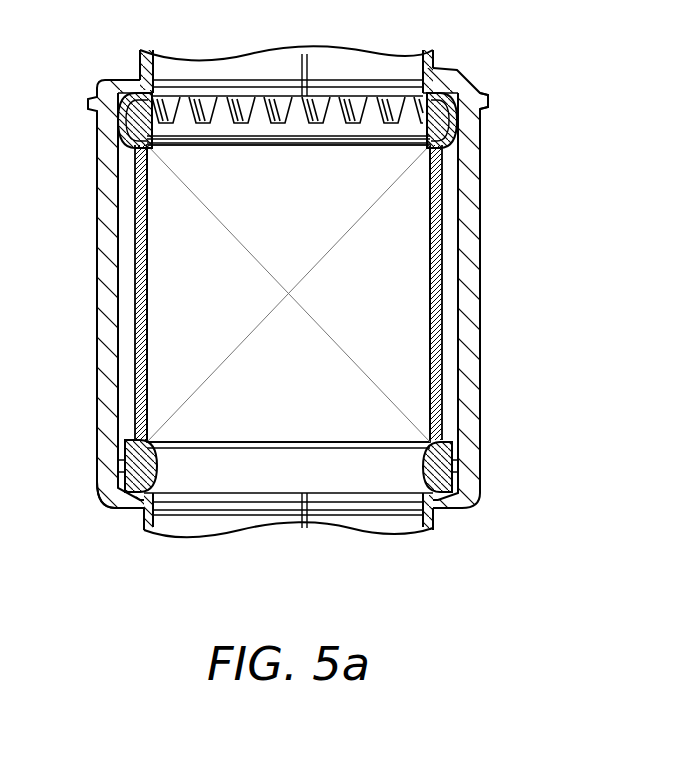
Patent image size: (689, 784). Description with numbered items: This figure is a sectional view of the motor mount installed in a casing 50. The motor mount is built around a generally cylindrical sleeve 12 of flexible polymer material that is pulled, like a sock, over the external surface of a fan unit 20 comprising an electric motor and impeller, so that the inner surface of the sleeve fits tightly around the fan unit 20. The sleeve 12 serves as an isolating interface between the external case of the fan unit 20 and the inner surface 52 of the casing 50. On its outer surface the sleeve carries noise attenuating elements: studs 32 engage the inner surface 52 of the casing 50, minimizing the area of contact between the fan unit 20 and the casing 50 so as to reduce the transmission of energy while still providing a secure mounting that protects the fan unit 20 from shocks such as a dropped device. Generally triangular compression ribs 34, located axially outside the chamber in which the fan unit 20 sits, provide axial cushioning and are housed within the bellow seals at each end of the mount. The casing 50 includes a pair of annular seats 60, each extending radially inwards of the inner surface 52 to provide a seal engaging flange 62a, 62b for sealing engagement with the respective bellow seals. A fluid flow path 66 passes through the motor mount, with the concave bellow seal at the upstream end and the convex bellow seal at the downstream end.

The sleeve 12 is at (437, 290).
The fan unit 20 is at (410, 221).
The studs 32 is at (122, 154).
The compression ribs 34 is at (440, 470).
The casing 50 is at (470, 381).
The inner surface of the housing 52 is at (118, 300).
The annular seats 60 is at (456, 70).
The seal engaging flange 62a is at (118, 490).
The seal engaging flange 62b is at (484, 106).
The fluid flow path 66 is at (292, 556).